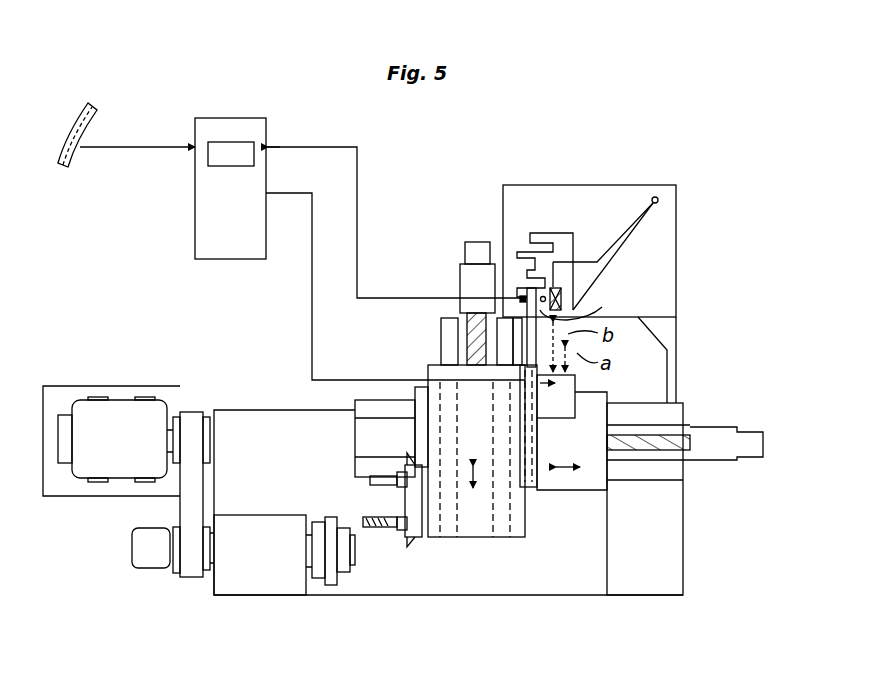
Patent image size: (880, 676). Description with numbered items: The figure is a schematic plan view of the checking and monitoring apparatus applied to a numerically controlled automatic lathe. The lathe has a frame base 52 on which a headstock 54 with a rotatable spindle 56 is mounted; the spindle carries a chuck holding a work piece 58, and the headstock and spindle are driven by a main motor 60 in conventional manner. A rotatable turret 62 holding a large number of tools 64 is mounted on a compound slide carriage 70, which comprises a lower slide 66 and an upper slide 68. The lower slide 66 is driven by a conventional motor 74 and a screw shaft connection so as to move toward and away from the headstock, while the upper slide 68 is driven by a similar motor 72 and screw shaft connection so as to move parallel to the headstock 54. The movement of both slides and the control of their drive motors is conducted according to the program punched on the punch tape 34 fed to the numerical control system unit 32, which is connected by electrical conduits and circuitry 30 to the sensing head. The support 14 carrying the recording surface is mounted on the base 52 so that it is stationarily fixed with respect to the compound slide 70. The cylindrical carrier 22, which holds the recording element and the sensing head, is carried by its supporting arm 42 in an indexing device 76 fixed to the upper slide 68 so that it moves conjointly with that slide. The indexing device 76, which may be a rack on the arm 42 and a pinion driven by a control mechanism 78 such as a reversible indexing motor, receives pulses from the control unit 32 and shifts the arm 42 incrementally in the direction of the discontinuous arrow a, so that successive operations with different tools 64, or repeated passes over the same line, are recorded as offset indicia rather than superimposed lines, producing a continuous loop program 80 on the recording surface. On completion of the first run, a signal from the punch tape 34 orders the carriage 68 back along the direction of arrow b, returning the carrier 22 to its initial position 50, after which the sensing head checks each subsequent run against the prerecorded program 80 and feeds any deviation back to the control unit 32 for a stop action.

The support 14 is at (667, 225).
The cylindrical carrier 22 is at (585, 305).
The electrical conduits and circuitry 30 is at (357, 220).
The numerical control system unit 32 is at (238, 128).
The punch tape 34 is at (93, 120).
The supporting arm 42 is at (533, 288).
The initial position 50 is at (655, 196).
The frame base 52 is at (250, 410).
The headstock 54 is at (240, 565).
The rotatable spindle 56 is at (308, 522).
The work piece 58 is at (343, 567).
The main motor 60 is at (108, 414).
The rotatable turret 62 is at (398, 539).
The tools 64 is at (363, 479).
The lower slide 66 is at (582, 482).
The upper slide 68 is at (488, 530).
The compound slide carriage 70 is at (400, 398).
The motor 72 is at (473, 280).
The motor 74 is at (715, 438).
The indexing device 76 is at (528, 487).
The control mechanism 78 is at (560, 410).
The continuous loop program 80 is at (547, 233).